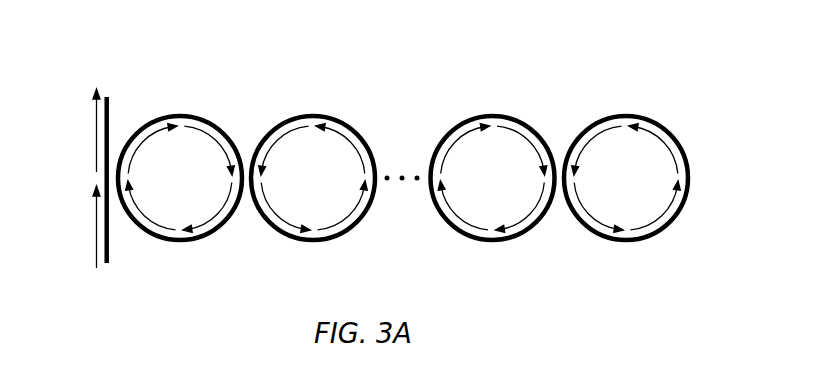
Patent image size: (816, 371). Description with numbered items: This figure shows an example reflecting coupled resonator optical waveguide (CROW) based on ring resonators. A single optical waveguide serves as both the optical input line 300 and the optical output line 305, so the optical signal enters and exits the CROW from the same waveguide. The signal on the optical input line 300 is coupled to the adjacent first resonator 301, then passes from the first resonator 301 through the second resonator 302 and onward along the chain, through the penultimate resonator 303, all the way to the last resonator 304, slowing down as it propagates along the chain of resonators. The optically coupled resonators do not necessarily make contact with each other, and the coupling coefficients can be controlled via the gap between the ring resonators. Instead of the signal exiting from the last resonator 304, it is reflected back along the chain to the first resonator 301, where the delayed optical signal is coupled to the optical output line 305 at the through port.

The optical input line 300 is at (109, 248).
The optical output line 305 is at (110, 103).
The first resonator 301 is at (180, 178).
The second resonator 302 is at (313, 178).
The penultimate resonator 303 is at (493, 178).
The last resonator 304 is at (626, 178).